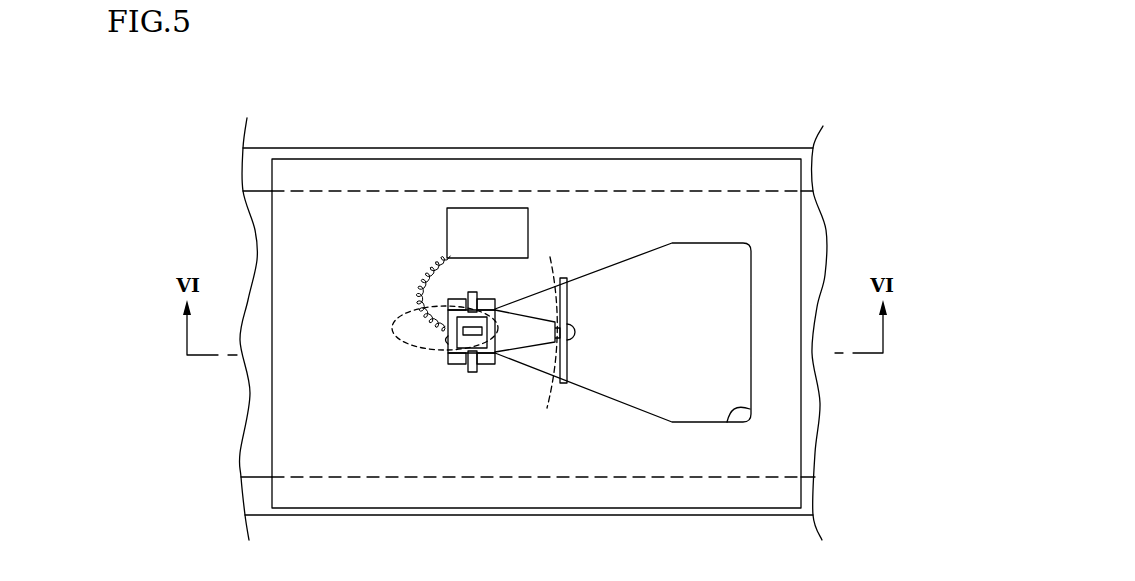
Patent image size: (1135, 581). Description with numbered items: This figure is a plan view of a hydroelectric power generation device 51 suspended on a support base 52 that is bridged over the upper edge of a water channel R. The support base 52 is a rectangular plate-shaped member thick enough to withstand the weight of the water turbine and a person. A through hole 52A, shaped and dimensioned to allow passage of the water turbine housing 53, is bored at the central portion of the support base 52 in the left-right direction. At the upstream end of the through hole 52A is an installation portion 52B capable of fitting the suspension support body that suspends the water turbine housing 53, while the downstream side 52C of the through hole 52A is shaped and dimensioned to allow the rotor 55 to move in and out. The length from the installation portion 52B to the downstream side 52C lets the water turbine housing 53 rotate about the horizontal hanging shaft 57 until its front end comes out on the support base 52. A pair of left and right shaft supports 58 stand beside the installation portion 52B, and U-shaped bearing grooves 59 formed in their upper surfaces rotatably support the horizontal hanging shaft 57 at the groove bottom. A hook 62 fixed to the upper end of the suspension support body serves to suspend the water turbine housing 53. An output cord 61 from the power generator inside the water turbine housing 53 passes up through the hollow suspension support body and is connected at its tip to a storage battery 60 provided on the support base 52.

The hydroelectric power generation device 51 is at (732, 133).
The support base 52 is at (521, 154).
The through hole 52A is at (623, 332).
The installation portion 52B is at (447, 347).
The downstream side 52C is at (728, 421).
The water turbine housing 53 is at (534, 350).
The rotor 55 is at (576, 304).
The horizontal hanging shaft 57 is at (466, 377).
The shaft support 58 is at (453, 299).
The bearing groove 59 is at (479, 299).
The storage battery 60 is at (447, 228).
The output cord 61 is at (417, 296).
The hook 62 is at (488, 333).
The water channel R is at (813, 210).